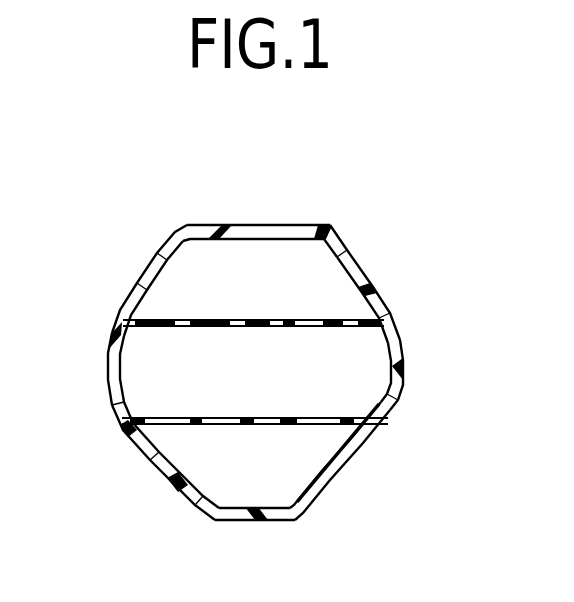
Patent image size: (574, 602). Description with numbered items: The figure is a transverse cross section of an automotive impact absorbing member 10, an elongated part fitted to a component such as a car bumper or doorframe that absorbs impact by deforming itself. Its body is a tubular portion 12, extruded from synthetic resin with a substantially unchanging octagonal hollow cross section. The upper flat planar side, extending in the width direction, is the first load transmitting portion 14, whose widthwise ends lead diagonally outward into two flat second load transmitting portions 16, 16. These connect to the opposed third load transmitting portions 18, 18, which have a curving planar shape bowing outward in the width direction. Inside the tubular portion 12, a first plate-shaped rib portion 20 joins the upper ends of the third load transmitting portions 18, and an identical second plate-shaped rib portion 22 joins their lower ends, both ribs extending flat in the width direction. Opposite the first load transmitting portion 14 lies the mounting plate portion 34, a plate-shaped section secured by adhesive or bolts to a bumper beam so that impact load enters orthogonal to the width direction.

The automotive impact absorbing member 10 is at (124, 170).
The tubular portion 12 is at (224, 214).
The first load transmitting portion 14 is at (281, 233).
The second load transmitting portions 16 is at (158, 263).
The third load transmitting portions 18 is at (116, 363).
The first plate-shaped rib portion 20 is at (265, 325).
The second plate-shaped rib portion 22 is at (242, 423).
The mounting plate portion 34 is at (260, 514).